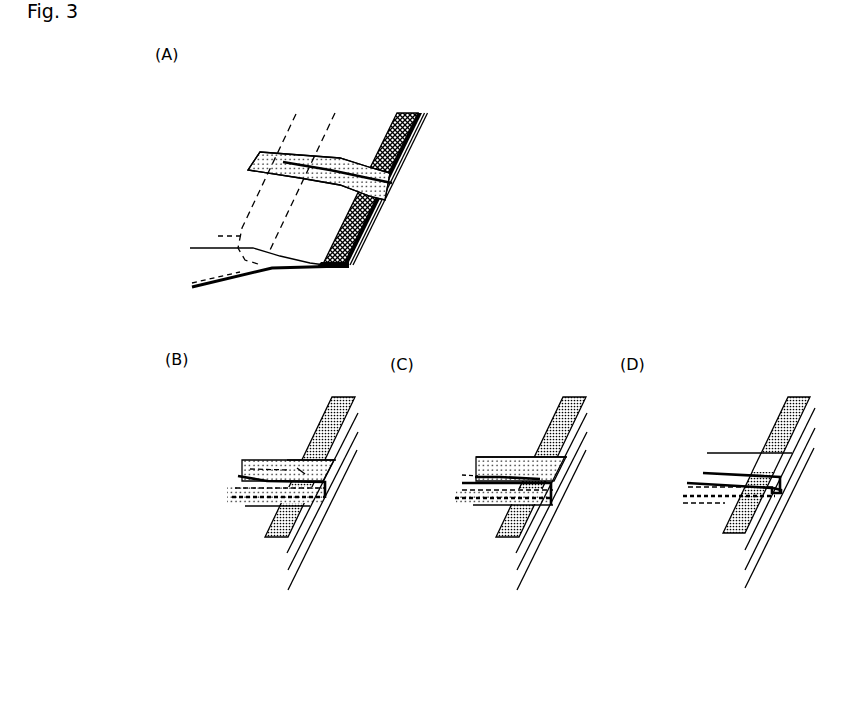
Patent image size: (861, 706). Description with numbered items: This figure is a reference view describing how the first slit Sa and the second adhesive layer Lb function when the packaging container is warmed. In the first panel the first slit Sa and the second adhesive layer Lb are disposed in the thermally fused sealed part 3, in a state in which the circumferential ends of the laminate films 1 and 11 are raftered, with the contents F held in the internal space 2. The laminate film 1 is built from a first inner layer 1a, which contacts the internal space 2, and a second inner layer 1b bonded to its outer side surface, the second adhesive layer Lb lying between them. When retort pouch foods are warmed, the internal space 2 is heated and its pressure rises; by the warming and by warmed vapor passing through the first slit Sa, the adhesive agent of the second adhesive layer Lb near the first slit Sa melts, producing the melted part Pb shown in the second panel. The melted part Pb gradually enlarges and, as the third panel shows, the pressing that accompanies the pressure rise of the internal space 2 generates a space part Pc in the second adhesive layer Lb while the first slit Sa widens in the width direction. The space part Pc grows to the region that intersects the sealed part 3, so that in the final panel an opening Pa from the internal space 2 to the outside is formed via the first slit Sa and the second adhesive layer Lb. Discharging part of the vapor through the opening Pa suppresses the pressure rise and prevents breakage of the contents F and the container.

The laminate film 1 is at (210, 248).
The first inner layer 1a is at (285, 547).
The second inner layer 1b is at (285, 568).
The laminate film 11 is at (265, 273).
The internal space 2 is at (357, 128).
The thermally fused sealed part 3 is at (413, 115).
The contents F is at (295, 113).
The second adhesive layer Lb is at (262, 153).
The first slit Sa is at (333, 167).
The opening Pa is at (782, 488).
The melted part Pb is at (265, 470).
The space part Pc is at (492, 468).